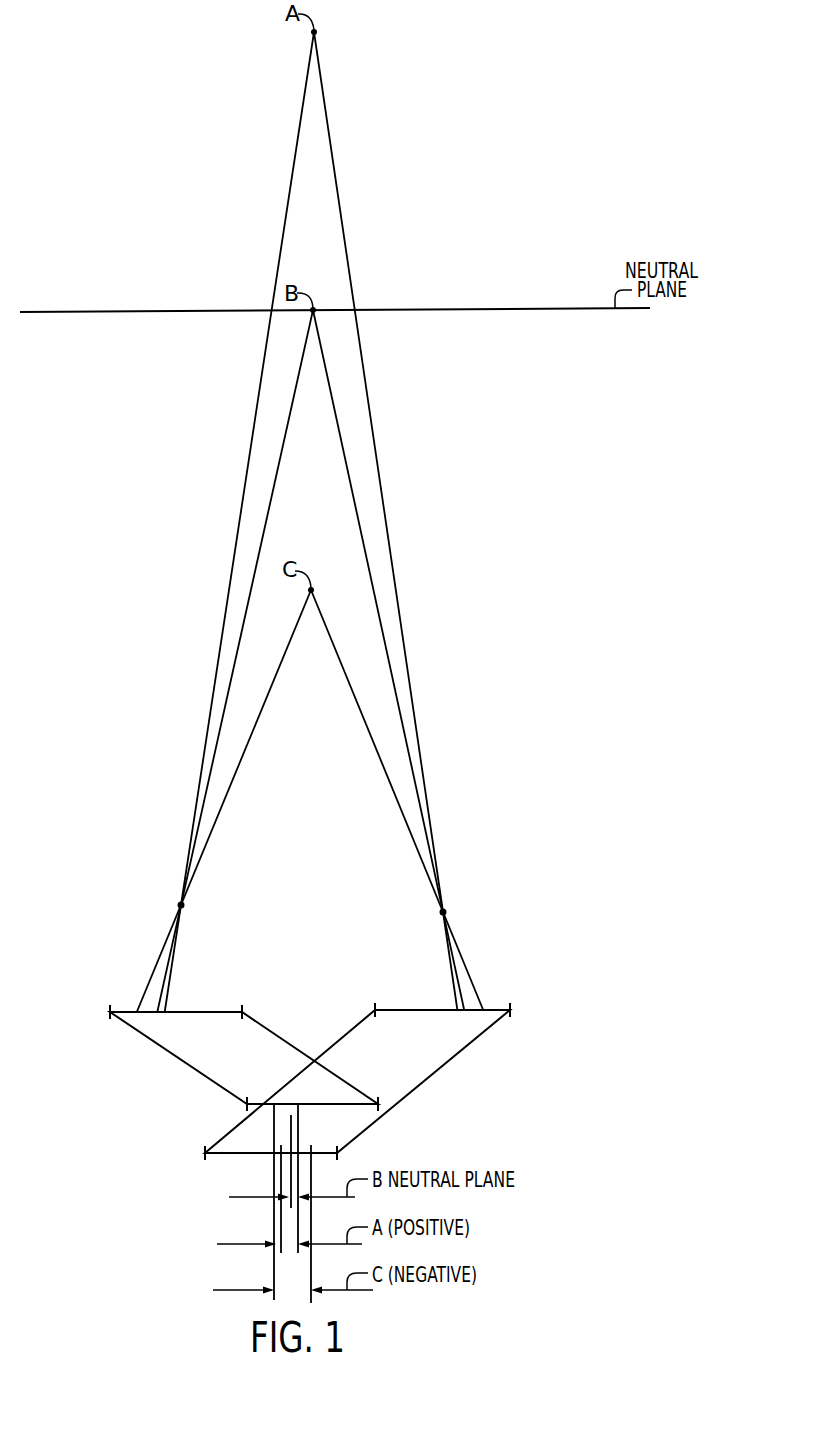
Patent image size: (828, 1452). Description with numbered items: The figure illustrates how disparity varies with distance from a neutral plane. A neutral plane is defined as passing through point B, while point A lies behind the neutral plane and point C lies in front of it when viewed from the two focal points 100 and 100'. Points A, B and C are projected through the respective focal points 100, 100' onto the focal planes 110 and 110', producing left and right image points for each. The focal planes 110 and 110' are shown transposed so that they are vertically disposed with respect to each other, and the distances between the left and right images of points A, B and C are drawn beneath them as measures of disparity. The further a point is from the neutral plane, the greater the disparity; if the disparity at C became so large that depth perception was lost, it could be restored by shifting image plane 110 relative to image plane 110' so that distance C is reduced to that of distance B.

The focal point 100 is at (195, 925).
The focal point 100' is at (429, 932).
The focal plane 110 is at (244, 1058).
The focal plane 110' is at (357, 1081).